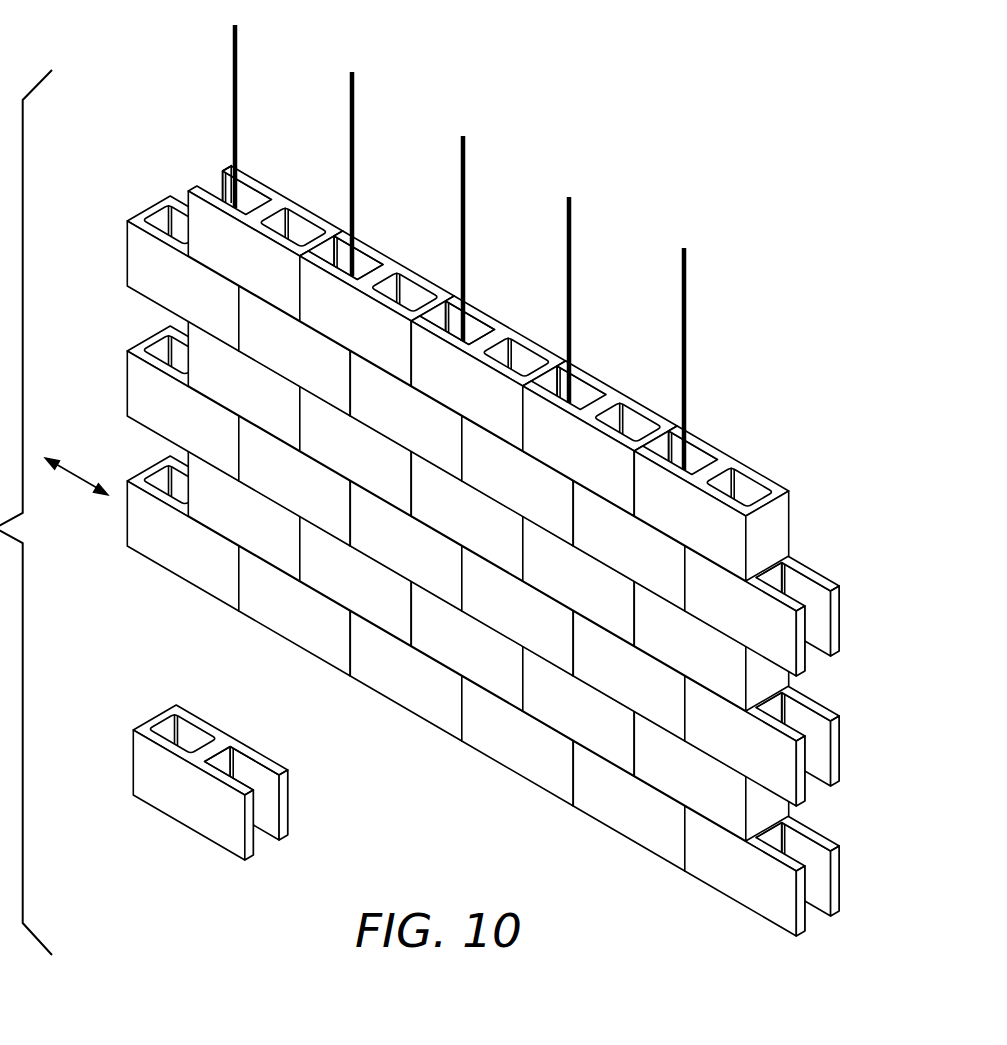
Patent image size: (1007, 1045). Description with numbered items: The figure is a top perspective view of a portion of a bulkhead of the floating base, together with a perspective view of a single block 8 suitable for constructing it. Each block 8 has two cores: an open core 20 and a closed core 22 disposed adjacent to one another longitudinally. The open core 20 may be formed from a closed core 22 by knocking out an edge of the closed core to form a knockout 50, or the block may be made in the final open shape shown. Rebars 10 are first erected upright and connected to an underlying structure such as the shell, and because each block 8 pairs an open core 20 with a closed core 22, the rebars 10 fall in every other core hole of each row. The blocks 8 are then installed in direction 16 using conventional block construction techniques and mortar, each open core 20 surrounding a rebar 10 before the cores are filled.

The block 8 is at (282, 202).
The rebar 10 is at (238, 58).
The direction 16 is at (82, 464).
The open core 20 is at (360, 260).
The closed core 22 is at (403, 275).
The knockout 50 is at (215, 184).